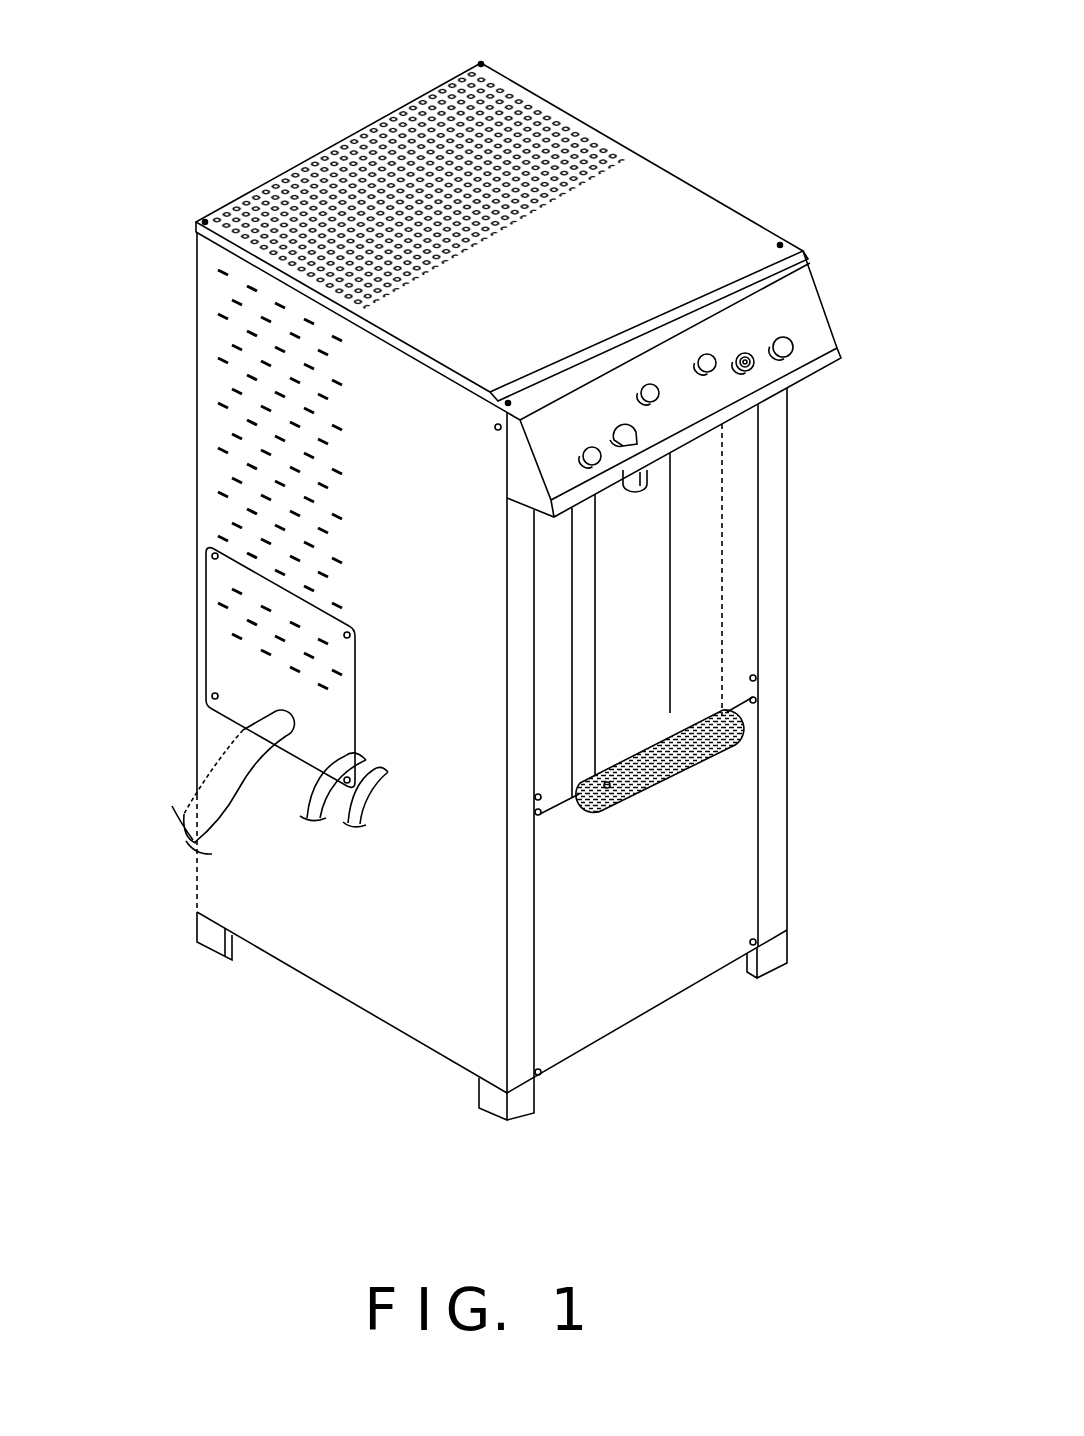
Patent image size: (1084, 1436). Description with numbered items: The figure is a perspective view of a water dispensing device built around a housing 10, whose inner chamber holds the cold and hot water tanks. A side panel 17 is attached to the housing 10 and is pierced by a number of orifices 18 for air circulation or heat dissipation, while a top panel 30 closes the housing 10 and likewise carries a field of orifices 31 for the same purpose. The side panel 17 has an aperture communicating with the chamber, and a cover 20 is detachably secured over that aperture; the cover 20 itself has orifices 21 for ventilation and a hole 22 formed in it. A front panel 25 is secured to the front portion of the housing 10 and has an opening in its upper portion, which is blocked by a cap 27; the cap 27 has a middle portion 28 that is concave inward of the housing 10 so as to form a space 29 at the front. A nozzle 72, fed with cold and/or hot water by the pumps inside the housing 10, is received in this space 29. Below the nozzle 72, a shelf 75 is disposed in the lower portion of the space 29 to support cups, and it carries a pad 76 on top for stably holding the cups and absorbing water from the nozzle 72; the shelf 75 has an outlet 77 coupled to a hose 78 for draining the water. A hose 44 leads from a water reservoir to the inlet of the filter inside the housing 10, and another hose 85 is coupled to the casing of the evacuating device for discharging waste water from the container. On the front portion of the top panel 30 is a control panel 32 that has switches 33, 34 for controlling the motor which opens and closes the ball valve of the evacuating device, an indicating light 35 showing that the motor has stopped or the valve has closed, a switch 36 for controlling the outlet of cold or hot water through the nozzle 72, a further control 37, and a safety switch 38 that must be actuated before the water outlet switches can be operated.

The housing 10 is at (721, 114).
The side panel 17 is at (437, 1024).
The orifices 18 is at (217, 360).
The cover 20 is at (227, 677).
The orifices 21 is at (223, 605).
The hole 22 is at (289, 732).
The front panel 25 is at (614, 973).
The cap 27 is at (740, 525).
The middle portion 28 is at (698, 610).
The space 29 is at (657, 727).
The top panel 30 is at (533, 137).
The orifices 31 is at (360, 225).
The control panel 32 is at (800, 307).
The switch 33 is at (793, 352).
The switch 34 is at (590, 447).
The indicating light 35 is at (625, 421).
The switch 36 is at (703, 354).
The control knob 37 is at (655, 384).
The safety switch 38 is at (745, 353).
The hose 44 is at (350, 830).
The nozzle 72 is at (650, 488).
The shelf 75 is at (723, 722).
The pad 76 is at (650, 787).
The outlet 77 is at (610, 792).
The hose 78 is at (323, 793).
The hose 85 is at (192, 843).